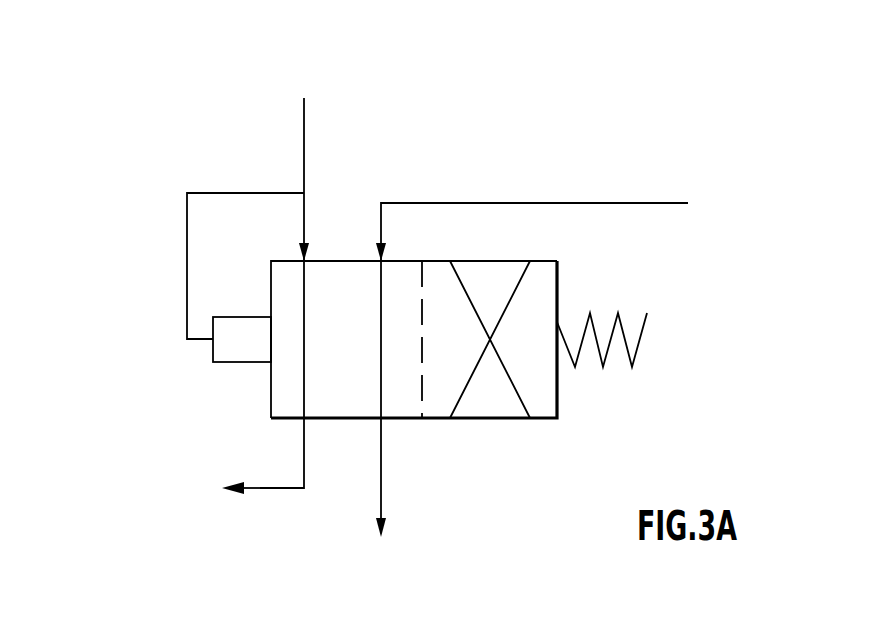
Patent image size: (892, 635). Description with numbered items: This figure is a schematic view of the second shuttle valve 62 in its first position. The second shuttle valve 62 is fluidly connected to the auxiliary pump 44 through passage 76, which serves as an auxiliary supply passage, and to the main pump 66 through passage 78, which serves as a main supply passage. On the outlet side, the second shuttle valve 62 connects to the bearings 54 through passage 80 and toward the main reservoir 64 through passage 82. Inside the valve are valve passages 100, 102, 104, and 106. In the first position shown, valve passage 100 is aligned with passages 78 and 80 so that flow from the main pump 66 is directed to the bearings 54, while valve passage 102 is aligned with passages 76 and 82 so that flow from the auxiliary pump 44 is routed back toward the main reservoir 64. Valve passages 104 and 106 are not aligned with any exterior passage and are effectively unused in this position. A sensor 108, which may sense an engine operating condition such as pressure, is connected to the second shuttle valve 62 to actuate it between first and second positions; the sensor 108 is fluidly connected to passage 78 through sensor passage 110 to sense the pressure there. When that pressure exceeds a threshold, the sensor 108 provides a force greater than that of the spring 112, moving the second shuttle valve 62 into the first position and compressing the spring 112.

The second shuttle valve 62 is at (469, 343).
The main pump 66 is at (304, 98).
The auxiliary pump 44 is at (681, 204).
The bearings 54 is at (166, 484).
The main reservoir 64 is at (392, 542).
The passage 76 is at (568, 203).
The passage 78 is at (304, 166).
The passage 80 is at (304, 462).
The passage 82 is at (382, 500).
The valve passage 100 is at (304, 355).
The valve passage 102 is at (381, 297).
The valve passage 104 is at (456, 284).
The valve passage 106 is at (514, 300).
The sensor 108 is at (232, 362).
The sensor passage 110 is at (211, 193).
The spring 112 is at (590, 318).